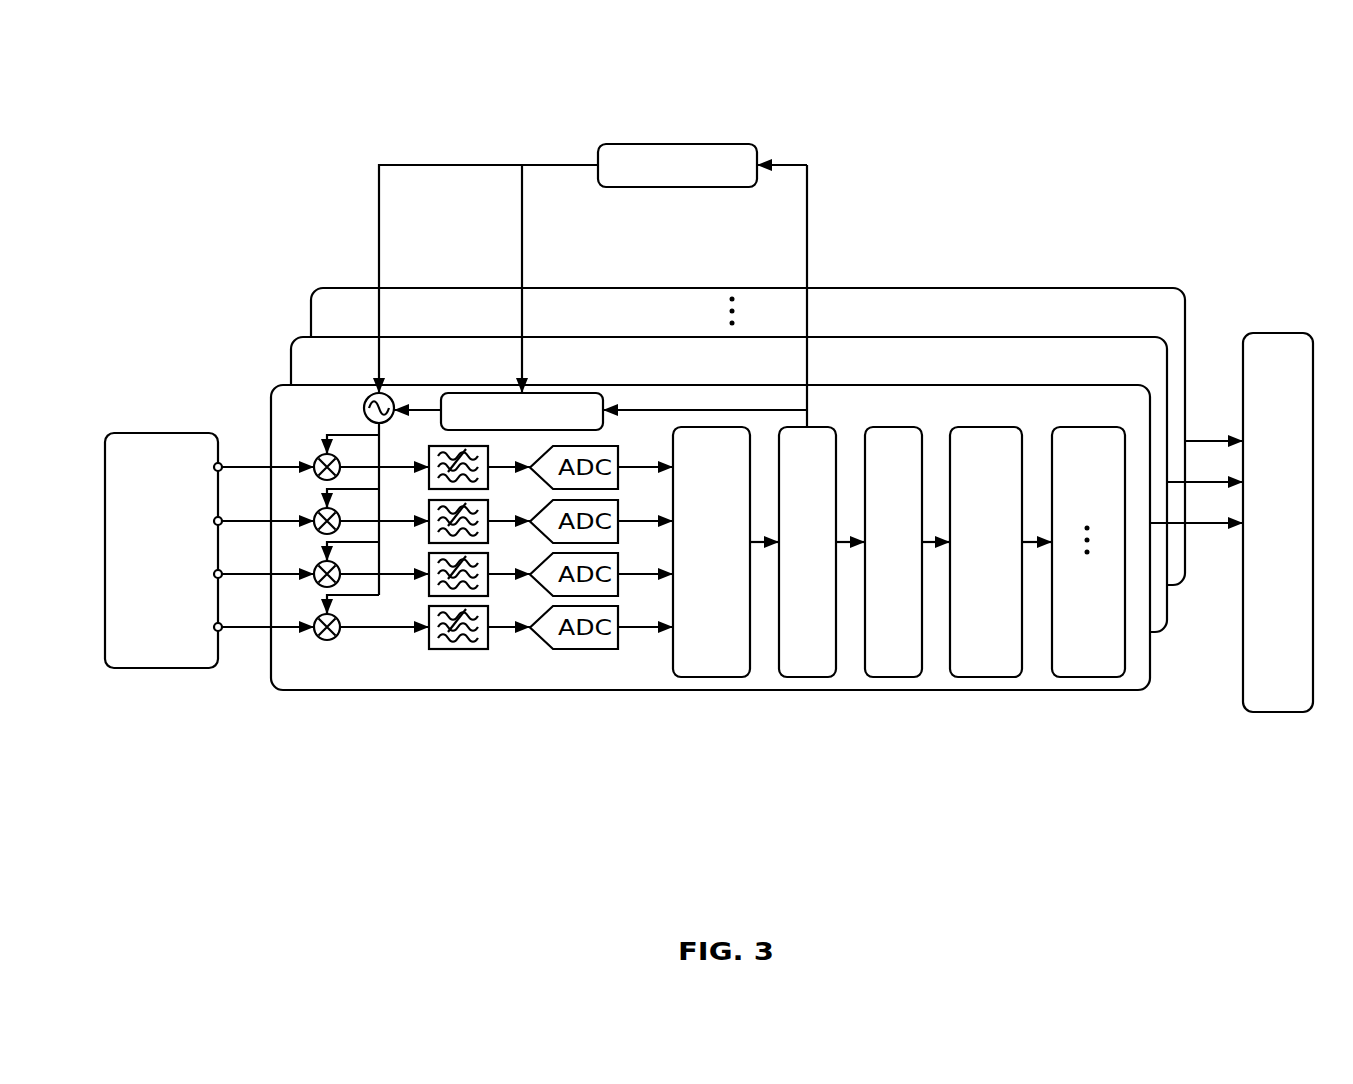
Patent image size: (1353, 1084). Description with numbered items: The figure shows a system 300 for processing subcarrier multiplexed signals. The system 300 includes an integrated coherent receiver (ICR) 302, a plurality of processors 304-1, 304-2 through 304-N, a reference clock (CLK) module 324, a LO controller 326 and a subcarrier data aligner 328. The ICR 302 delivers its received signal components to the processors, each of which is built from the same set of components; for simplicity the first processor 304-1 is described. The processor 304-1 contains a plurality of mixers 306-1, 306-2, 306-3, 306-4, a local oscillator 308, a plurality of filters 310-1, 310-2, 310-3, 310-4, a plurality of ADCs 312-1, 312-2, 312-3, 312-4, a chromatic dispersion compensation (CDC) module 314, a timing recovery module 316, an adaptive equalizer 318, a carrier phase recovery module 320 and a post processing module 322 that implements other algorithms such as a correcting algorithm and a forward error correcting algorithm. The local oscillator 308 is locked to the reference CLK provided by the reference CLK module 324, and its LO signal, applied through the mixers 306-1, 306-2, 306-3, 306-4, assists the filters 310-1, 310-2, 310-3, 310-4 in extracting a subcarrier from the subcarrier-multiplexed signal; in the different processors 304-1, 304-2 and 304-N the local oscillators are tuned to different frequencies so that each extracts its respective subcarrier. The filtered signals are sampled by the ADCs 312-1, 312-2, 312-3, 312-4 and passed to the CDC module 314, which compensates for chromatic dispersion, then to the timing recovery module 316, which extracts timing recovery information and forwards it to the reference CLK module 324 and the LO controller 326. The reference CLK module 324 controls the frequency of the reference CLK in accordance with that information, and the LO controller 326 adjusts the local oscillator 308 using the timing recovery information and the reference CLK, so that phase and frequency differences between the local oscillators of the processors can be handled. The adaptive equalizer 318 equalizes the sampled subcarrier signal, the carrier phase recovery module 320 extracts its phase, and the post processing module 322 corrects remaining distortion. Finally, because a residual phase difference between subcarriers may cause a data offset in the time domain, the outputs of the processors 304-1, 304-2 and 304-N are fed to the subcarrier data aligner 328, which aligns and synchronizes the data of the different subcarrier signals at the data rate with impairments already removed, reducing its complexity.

The system 300 is at (163, 133).
The integrated coherent receiver (ICR) 302 is at (145, 431).
The processor 304-1 is at (272, 397).
The processor 304-2 is at (292, 342).
The processor 304-N is at (312, 291).
The mixer 306-1 is at (316, 457).
The mixer 306-2 is at (316, 532).
The mixer 306-3 is at (316, 586).
The mixer 306-4 is at (327, 642).
The local oscillator 308 is at (367, 395).
The filter 310-1 is at (427, 481).
The filter 310-2 is at (427, 535).
The filter 310-3 is at (427, 588).
The filter 310-4 is at (455, 651).
The ADC 312-1 is at (628, 480).
The ADC 312-2 is at (627, 530).
The ADC 312-3 is at (537, 588).
The ADC 312-4 is at (573, 651).
The chromatic dispersion compensation (CDC) module 314 is at (733, 678).
The timing recovery module 316 is at (815, 678).
The adaptive equalizer 318 is at (897, 678).
The carrier phase recovery module 320 is at (980, 678).
The post processing module 322 is at (1083, 678).
The reference clock (CLK) module 324 is at (697, 143).
The LO controller 326 is at (560, 392).
The subcarrier data aligner 328 is at (1276, 713).